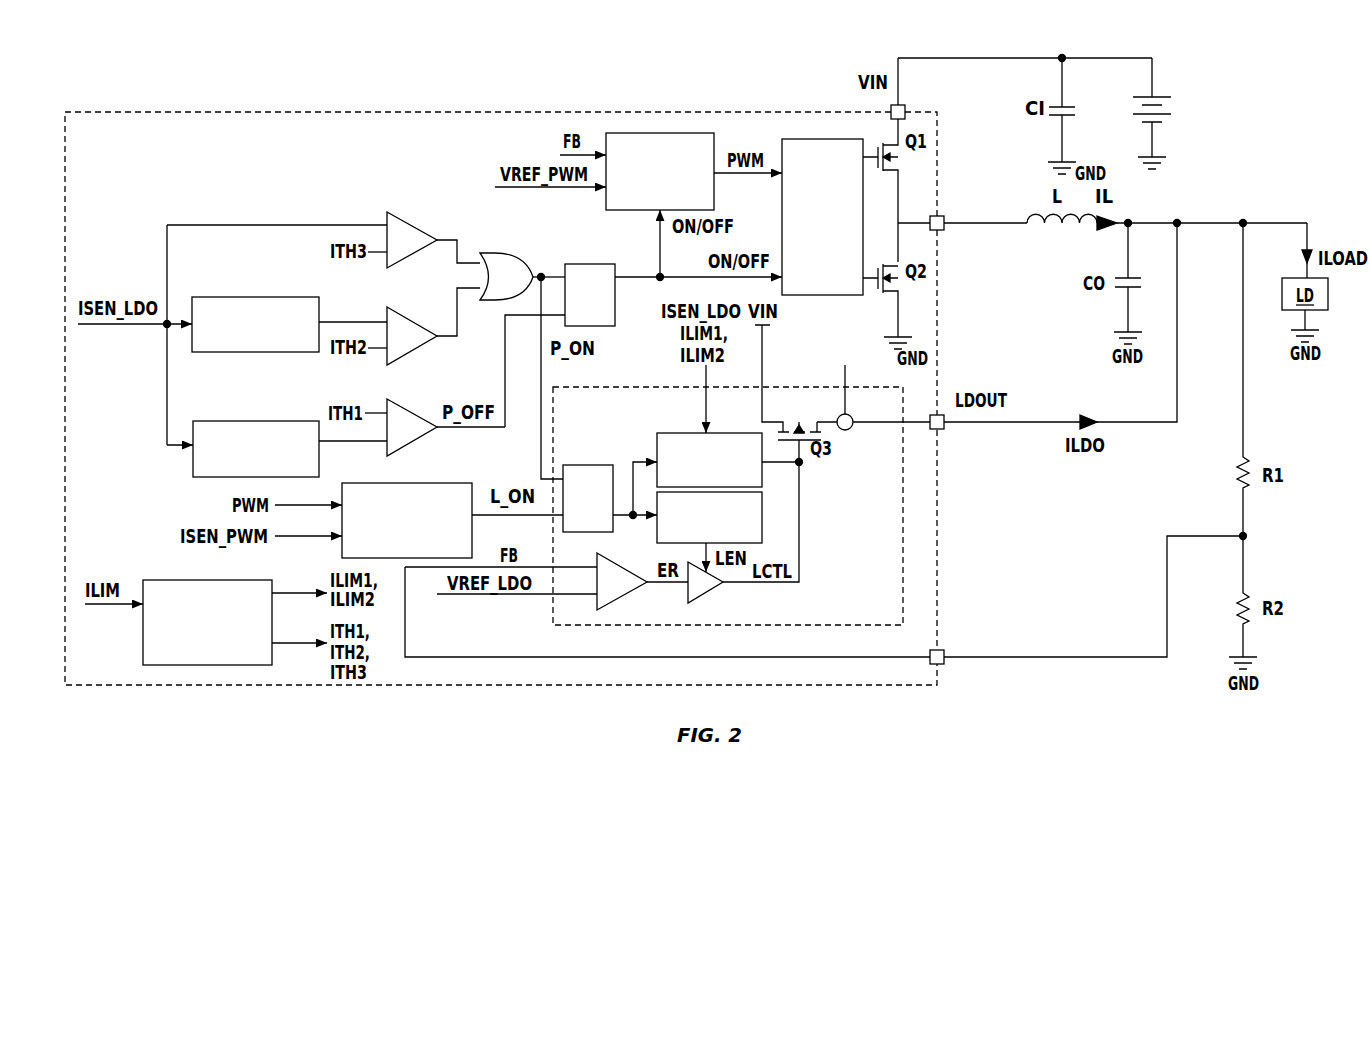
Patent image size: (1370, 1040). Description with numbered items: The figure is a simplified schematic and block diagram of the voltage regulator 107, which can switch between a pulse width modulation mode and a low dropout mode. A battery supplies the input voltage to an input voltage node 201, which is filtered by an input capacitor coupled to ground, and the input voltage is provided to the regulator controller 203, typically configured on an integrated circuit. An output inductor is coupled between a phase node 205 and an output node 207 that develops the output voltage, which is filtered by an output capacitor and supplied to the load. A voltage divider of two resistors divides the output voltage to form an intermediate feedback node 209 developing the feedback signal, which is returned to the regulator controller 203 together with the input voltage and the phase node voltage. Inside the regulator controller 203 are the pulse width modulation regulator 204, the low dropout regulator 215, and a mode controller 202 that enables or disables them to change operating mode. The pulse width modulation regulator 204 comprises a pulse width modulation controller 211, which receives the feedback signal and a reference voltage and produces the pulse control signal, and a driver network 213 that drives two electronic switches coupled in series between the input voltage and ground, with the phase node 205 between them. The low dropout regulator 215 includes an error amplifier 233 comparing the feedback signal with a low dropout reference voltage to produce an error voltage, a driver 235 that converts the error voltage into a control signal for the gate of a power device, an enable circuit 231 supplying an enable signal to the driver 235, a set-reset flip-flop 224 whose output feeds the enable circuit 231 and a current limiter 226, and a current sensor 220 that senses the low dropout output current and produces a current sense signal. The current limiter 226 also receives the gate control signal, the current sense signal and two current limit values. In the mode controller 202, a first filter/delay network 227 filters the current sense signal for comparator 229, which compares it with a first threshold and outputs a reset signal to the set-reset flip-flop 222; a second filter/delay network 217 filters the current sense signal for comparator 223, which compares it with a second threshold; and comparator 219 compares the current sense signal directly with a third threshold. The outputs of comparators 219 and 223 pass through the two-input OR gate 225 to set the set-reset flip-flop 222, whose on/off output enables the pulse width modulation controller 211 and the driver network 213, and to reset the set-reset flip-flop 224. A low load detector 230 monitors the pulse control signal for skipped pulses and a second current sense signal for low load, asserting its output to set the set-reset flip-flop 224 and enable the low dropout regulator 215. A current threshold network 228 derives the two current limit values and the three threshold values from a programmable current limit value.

The voltage regulator 107 is at (691, 71).
The input voltage node 201 is at (1127, 58).
The mode controller 202 is at (188, 497).
The regulator controller 203 is at (560, 112).
The PWM regulator 204 is at (485, 160).
The PHASE node 205 is at (965, 224).
The output node 207 is at (1177, 223).
The intermediate feedback node 209 is at (1020, 657).
The PWM controller 211 is at (674, 203).
The driver network 213 is at (836, 243).
The LDO regulator 215 is at (575, 387).
The second filter/delay network 217 is at (270, 348).
The comparator 219 is at (413, 218).
The current sensor 220 is at (851, 428).
The SRFF 222 is at (607, 312).
The comparator 223 is at (412, 352).
The SRFF 224 is at (607, 505).
The 2-input logic OR gate 225 is at (498, 253).
The current limiter 226 is at (724, 485).
The first filter/delay network 227 is at (270, 473).
The current threshold network 228 is at (221, 665).
The comparator 229 is at (410, 442).
The low load detector 230 is at (421, 559).
The enable circuit 231 is at (724, 541).
The error amplifier 233 is at (628, 570).
The driver 235 is at (702, 595).